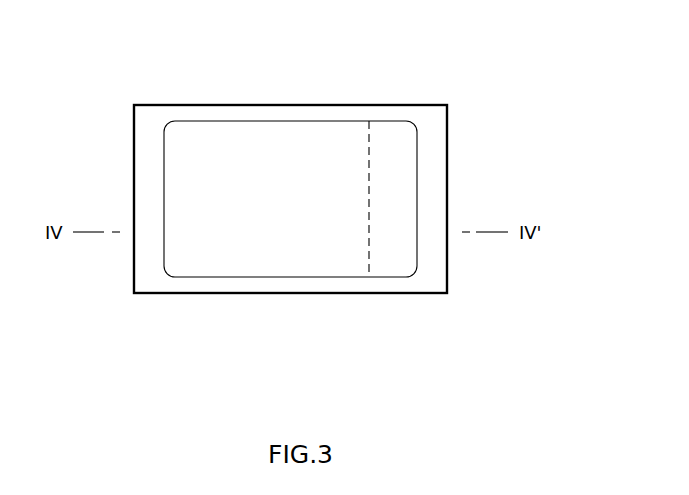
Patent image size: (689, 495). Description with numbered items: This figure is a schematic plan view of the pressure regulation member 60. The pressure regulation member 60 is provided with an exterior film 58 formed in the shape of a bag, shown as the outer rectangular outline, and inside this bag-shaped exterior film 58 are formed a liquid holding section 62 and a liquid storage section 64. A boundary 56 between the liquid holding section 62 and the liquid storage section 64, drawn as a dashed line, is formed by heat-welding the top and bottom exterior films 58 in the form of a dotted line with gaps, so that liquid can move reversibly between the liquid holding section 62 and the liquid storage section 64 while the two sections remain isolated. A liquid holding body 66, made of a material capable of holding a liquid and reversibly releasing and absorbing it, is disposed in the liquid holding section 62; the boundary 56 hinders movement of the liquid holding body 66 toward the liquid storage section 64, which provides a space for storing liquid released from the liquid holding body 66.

The boundary 56 is at (370, 258).
The exterior film 58 is at (441, 149).
The pressure regulation member 60 is at (506, 49).
The liquid holding section 62 is at (222, 137).
The liquid storage section 64 is at (393, 135).
The liquid holding body 66 is at (214, 262).